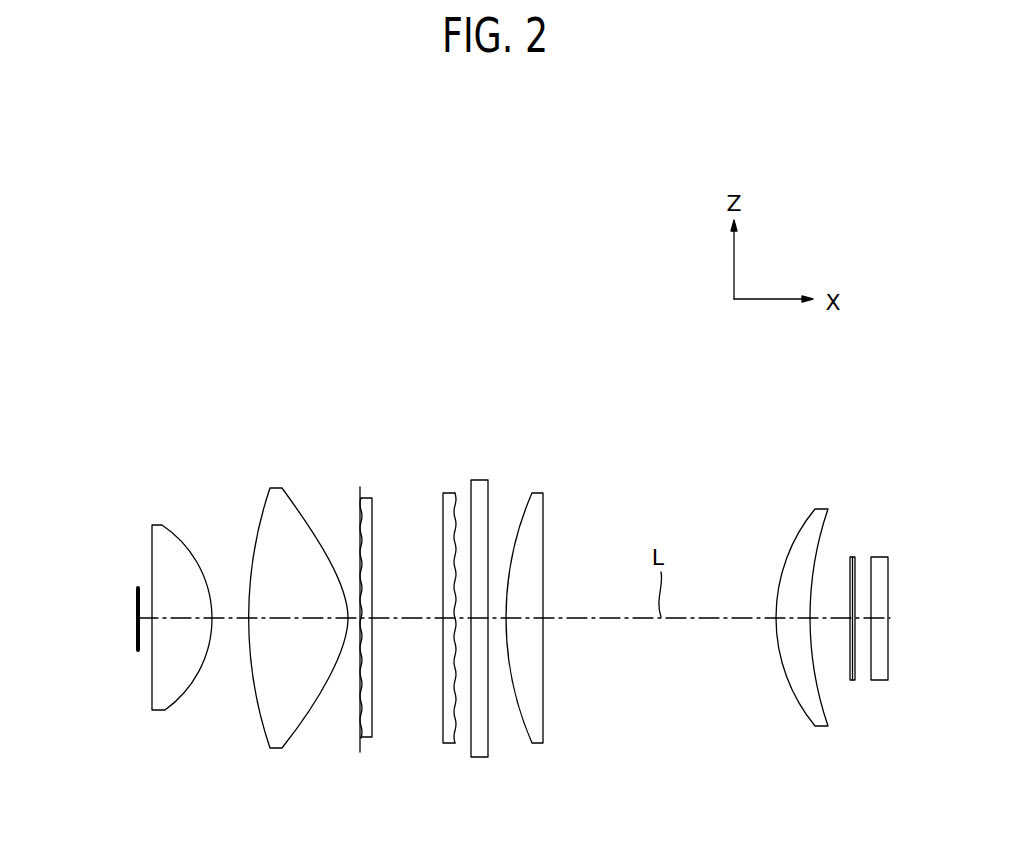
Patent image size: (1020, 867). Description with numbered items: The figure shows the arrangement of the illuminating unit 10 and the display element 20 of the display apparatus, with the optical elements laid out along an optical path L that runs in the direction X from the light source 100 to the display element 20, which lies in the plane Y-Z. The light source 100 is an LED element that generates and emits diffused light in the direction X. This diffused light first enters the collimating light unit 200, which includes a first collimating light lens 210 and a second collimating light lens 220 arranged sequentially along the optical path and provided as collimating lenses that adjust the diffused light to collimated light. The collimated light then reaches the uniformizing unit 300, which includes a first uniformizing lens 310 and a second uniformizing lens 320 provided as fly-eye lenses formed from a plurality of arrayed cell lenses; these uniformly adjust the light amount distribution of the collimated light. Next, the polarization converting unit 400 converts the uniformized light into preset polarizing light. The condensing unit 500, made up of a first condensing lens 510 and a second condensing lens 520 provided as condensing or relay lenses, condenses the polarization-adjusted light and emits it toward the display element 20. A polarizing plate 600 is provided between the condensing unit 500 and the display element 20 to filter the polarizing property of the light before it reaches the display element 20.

The illuminating unit 10 is at (598, 427).
The display element 20 is at (885, 557).
The light source 100 is at (135, 590).
The collimating light unit 200 is at (270, 407).
The first collimating light lens 210 is at (161, 526).
The second collimating light lens 220 is at (274, 489).
The uniformizing unit 300 is at (446, 407).
The first uniformizing lens 310 is at (360, 497).
The second uniformizing lens 320 is at (445, 493).
The polarization converting unit 400 is at (484, 481).
The condensing unit 500 is at (543, 806).
The first condensing lens 510 is at (537, 745).
The second condensing lens 520 is at (823, 728).
The polarizing plate 600 is at (851, 557).